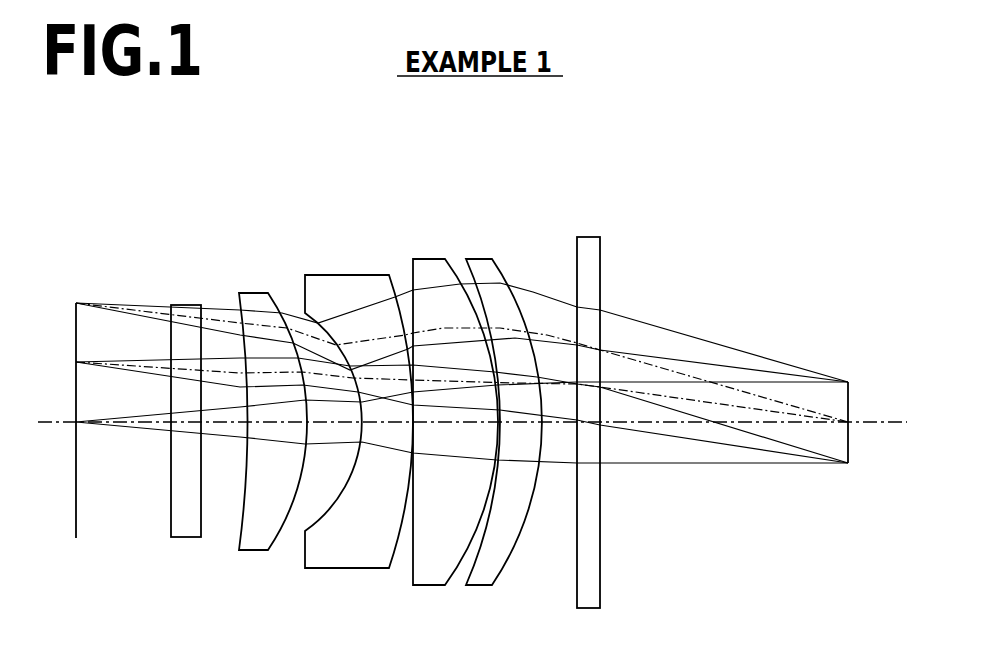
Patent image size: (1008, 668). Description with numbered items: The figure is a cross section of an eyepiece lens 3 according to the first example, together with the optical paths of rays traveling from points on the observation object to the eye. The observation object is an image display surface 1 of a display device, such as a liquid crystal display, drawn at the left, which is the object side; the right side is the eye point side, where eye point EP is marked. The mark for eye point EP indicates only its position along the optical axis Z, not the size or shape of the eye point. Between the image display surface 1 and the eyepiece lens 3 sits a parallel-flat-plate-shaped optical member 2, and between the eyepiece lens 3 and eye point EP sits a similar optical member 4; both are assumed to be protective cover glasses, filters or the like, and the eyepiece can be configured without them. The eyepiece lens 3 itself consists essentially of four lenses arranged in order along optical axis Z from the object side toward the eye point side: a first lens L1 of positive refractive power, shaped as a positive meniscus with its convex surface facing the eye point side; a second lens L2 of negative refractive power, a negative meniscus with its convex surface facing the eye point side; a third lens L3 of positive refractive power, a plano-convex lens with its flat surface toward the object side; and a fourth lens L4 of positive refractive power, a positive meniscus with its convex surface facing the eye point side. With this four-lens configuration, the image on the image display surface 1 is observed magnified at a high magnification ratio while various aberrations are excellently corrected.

The image display surface 1 is at (76, 336).
The optical member 2 is at (186, 310).
The eyepiece lens 3 is at (500, 168).
The first lens L1 is at (256, 300).
The second lens L2 is at (353, 287).
The third lens L3 is at (427, 263).
The fourth lens L4 is at (480, 265).
The optical member 4 is at (588, 243).
The eye point EP is at (849, 383).
The optical axis Z is at (893, 421).